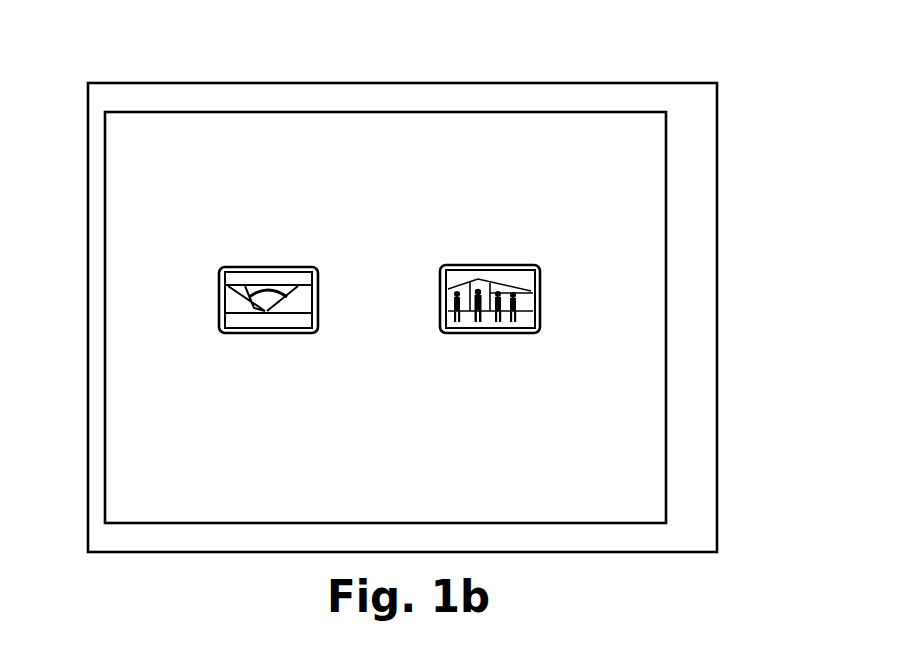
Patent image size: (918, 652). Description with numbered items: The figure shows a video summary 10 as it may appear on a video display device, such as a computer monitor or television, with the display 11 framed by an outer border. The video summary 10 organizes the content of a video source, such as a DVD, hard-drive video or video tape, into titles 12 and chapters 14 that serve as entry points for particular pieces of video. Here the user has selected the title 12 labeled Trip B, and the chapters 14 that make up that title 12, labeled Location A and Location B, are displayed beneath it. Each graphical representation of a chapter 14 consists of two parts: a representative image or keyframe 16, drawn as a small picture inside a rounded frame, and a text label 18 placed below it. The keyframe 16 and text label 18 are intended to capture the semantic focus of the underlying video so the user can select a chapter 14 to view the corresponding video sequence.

The video summary 10 is at (176, 62).
The display screen 11 is at (88, 340).
The title 12 is at (428, 155).
The chapter 14 is at (334, 265).
The keyframe 16 is at (515, 305).
The text label 18 is at (580, 352).